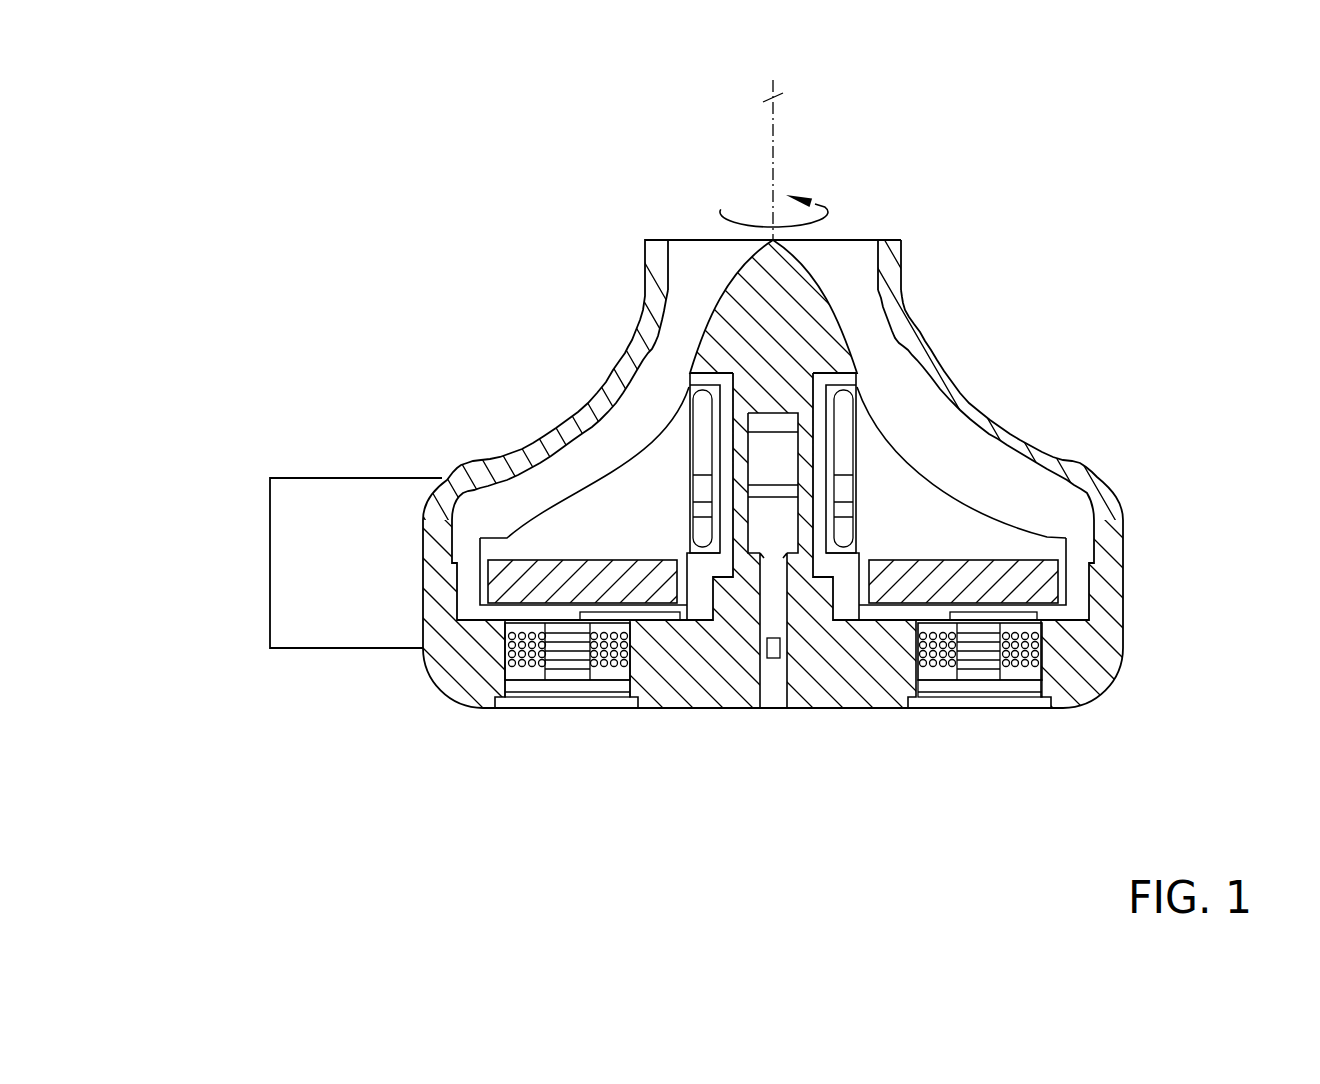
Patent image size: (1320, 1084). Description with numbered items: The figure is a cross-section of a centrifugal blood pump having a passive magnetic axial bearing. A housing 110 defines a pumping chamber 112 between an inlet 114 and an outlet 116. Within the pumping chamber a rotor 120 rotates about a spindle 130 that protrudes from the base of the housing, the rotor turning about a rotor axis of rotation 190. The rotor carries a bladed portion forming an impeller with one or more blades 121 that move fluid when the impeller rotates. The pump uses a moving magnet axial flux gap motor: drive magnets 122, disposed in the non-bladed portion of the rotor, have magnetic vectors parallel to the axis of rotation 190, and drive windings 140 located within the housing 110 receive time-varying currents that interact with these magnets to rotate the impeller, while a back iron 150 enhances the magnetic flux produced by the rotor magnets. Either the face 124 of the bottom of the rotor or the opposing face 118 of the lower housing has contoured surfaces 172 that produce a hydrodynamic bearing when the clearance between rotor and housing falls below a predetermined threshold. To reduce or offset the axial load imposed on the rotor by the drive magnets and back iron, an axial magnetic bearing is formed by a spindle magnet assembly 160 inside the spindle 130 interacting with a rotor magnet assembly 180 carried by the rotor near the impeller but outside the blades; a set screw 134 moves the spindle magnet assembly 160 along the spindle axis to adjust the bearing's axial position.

The housing 110 is at (993, 443).
The pumping chamber 112 is at (690, 305).
The inlet 114 is at (848, 277).
The outlet 116 is at (280, 598).
The opposing face 118 is at (473, 618).
The rotor 120 is at (547, 513).
The blades 121 is at (623, 512).
The drive magnets 122 is at (1038, 582).
The face of the bottom of the rotor 124 is at (1055, 612).
The spindle 130 is at (802, 335).
The set screw 134 is at (775, 622).
The drive windings 140 is at (600, 655).
The back iron 150 is at (563, 693).
The spindle magnet assembly 160 is at (795, 430).
The contoured surfaces 172 is at (665, 620).
The rotor magnet assembly 180 is at (705, 470).
The rotor axis of rotation 190 is at (775, 98).